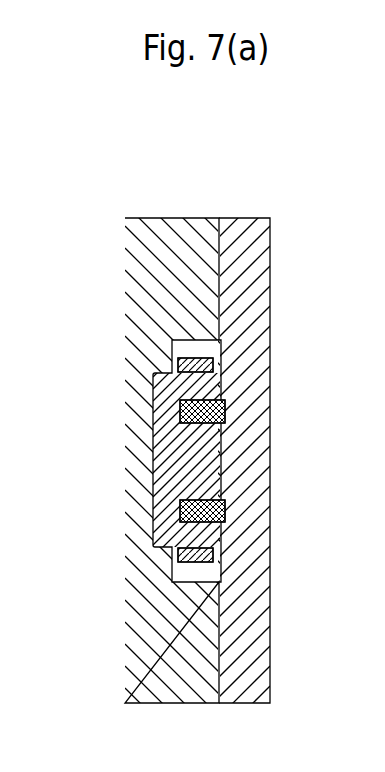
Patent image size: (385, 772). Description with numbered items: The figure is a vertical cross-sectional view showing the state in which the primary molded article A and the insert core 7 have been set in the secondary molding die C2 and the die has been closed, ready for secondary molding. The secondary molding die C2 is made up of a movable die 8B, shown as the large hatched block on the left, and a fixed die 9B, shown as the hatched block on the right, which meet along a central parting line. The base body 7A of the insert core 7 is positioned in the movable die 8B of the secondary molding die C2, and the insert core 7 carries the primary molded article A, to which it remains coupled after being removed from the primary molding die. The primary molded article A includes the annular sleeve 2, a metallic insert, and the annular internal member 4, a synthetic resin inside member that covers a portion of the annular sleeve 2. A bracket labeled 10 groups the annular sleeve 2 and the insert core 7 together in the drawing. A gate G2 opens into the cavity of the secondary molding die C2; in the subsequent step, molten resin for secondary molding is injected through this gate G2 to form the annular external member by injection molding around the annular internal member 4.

The movable die 8B is at (166, 217).
The fixed die 9B is at (241, 217).
The secondary molding die C2 is at (296, 209).
The annular internal member 4 is at (220, 363).
The primary molded article A is at (150, 390).
The annular sleeve 2 is at (182, 424).
The insert core 7 is at (152, 470).
The base body 7A is at (150, 518).
The assembly 10 is at (62, 403).
The gate G2 is at (222, 558).